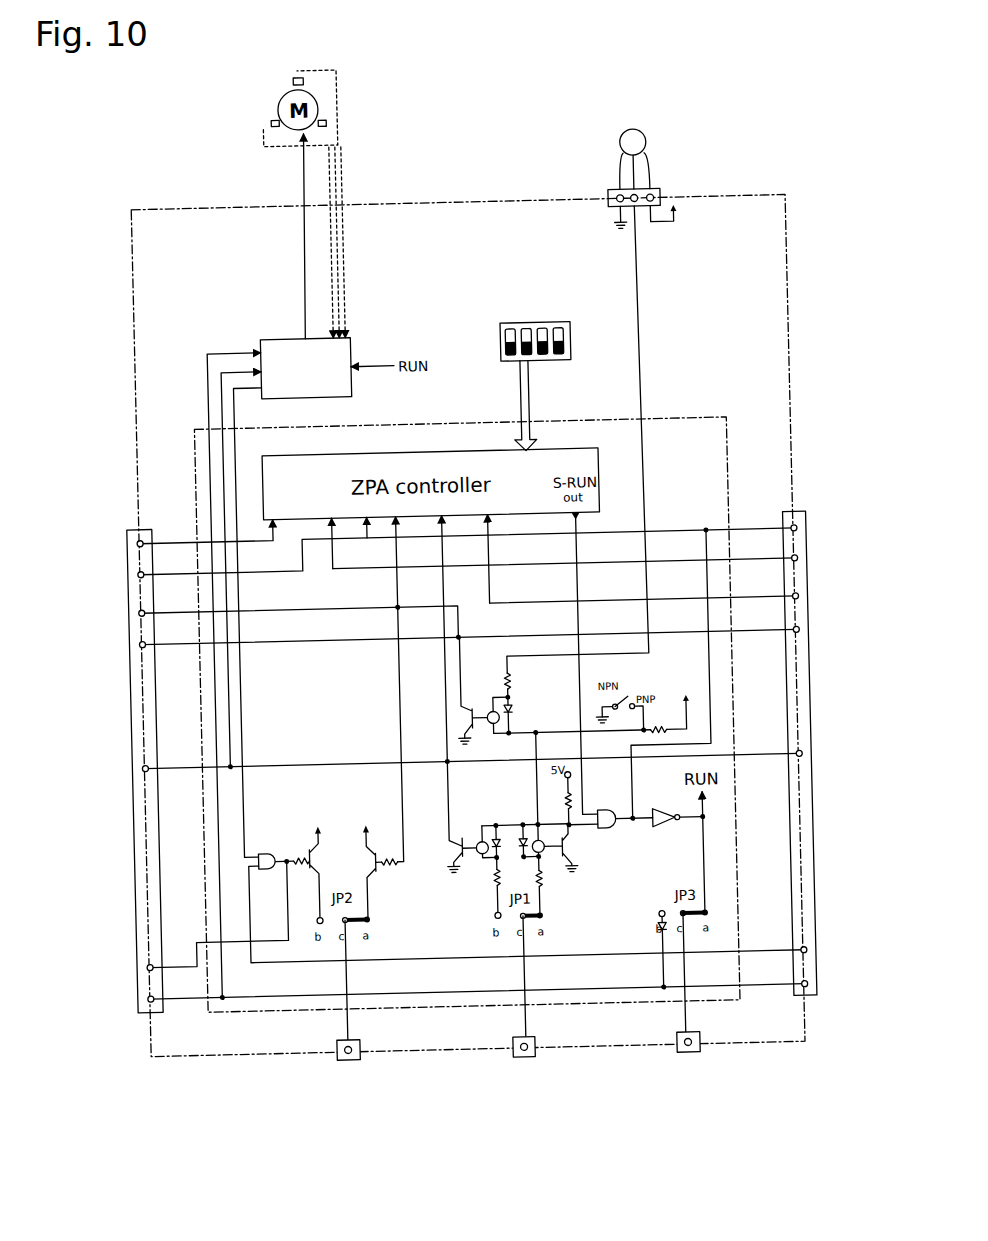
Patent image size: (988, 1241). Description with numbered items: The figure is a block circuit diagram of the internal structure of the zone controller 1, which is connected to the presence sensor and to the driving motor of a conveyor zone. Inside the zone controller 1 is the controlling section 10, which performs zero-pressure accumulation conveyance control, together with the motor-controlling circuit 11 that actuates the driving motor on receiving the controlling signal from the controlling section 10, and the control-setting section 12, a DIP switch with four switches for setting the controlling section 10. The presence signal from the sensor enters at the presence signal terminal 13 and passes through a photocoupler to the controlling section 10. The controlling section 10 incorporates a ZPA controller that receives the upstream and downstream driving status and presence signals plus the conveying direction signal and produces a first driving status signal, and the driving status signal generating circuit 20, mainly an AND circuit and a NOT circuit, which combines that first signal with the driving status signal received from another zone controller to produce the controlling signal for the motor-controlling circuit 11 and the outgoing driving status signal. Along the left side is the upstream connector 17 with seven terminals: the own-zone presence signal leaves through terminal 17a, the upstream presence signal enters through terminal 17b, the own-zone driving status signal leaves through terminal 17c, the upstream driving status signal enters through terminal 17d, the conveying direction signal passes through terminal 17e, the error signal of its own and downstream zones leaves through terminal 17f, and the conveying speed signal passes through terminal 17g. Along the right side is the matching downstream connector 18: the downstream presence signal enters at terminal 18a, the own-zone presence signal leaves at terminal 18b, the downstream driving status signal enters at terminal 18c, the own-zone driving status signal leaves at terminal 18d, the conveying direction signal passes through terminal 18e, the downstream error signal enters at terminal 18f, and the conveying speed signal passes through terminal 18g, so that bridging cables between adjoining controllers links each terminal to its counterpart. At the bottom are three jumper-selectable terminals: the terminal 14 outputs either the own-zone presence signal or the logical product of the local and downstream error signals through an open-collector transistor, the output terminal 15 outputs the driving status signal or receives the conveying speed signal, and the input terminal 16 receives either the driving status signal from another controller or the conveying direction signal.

The zone controller 1 is at (230, 202).
The controlling section 10 is at (200, 438).
The motor-controlling circuit 11 is at (266, 337).
The control-setting section 12 is at (496, 320).
The presence signal terminal 13 is at (670, 195).
The terminal 14 is at (337, 1057).
The output terminal 15 is at (678, 1057).
The input terminal 16 is at (514, 1058).
The upstream connector 17 is at (134, 522).
The terminal 17a is at (139, 607).
The terminal 17b is at (139, 640).
The terminal 17c is at (139, 568).
The terminal 17d is at (139, 535).
The terminal 17e is at (139, 762).
The terminal 17f is at (139, 960).
The terminal 17g is at (139, 992).
The downstream connector 18 is at (792, 519).
The terminal 18a is at (799, 604).
The terminal 18b is at (799, 638).
The terminal 18c is at (799, 566).
The terminal 18d is at (799, 536).
The terminal 18e is at (799, 762).
The terminal 18f is at (799, 958).
The terminal 18g is at (798, 994).
The driving status signal generating circuit 20 is at (599, 845).